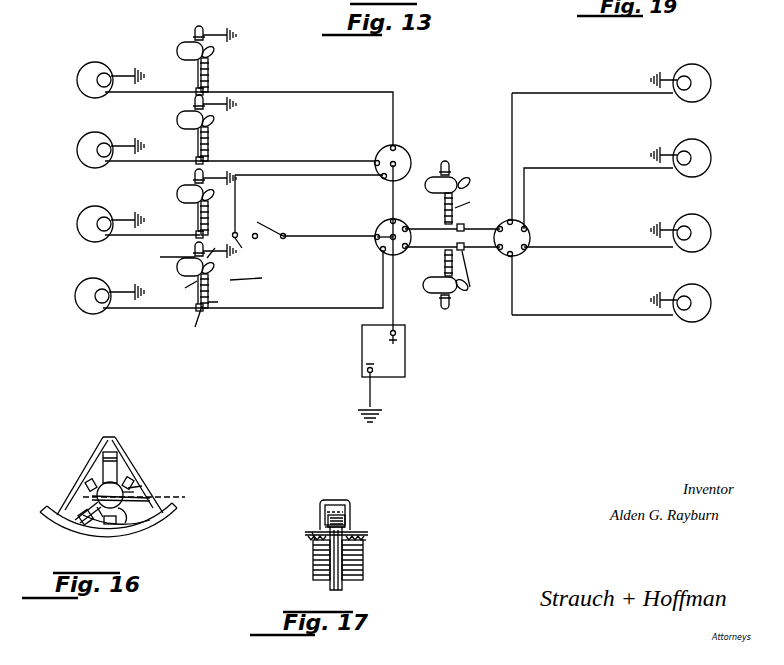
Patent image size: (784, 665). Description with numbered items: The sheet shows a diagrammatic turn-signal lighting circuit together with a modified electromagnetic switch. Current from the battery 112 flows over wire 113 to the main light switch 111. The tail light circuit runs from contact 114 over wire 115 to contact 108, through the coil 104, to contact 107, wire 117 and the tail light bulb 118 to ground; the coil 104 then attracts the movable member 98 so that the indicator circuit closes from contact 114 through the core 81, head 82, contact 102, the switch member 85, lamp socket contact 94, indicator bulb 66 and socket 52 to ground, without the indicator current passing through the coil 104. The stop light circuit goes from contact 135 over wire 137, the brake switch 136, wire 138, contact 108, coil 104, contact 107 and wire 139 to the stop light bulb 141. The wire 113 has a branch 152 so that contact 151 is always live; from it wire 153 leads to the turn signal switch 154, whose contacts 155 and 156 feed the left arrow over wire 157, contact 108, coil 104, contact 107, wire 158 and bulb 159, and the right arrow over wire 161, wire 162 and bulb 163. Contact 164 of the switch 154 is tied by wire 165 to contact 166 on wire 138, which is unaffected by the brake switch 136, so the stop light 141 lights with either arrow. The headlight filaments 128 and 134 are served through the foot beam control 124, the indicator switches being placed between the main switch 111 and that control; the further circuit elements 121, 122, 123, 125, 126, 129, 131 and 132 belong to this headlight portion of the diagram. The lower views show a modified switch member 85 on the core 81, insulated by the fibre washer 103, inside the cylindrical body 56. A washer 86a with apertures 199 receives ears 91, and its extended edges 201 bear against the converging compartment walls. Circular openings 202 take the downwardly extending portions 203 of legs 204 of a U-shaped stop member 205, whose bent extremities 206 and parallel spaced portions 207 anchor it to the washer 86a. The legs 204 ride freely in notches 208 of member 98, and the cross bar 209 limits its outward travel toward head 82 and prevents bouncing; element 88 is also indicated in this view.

In FIG. 13, the indicator bulb 66 is at (203, 28).
In FIG. 13, the switch member 85 is at (177, 47).
In FIG. 16, the switch member 85 is at (114, 465).
In FIG. 13, the movable contact member 98 is at (217, 268).
In FIG. 16, the movable contact member 98 is at (92, 507).
In FIG. 17, the movable contact member 98 is at (348, 505).
In FIG. 13, the coil 104 is at (208, 78).
In FIG. 17, the coil 104 is at (313, 560).
In FIG. 13, the contact member 107 is at (194, 89).
In FIG. 13, the contact member 108 is at (205, 92).
In FIG. 13, the light bulb 159 is at (80, 92).
In FIG. 13, the wire 158 is at (150, 93).
In FIG. 13, the light bulb 163 is at (78, 165).
In FIG. 13, the wire 162 is at (155, 163).
In FIG. 13, the stop light bulb 141 is at (85, 243).
In FIG. 13, the wire 139 is at (142, 237).
In FIG. 13, the tail light bulb 118 is at (85, 318).
In FIG. 13, the wire 117 is at (153, 310).
In FIG. 13, the lamp socket contact 94 is at (169, 256).
In FIG. 13, the light socket 52 is at (218, 246).
In FIG. 13, the contact 102 is at (179, 287).
In FIG. 13, the head 82 is at (255, 280).
In FIG. 17, the head 82 is at (328, 517).
In FIG. 13, the core 81 is at (348, 249).
In FIG. 17, the core 81 is at (347, 582).
In FIG. 13, the wire 157 is at (358, 91).
In FIG. 13, the wire 161 is at (290, 161).
In FIG. 13, the contact 164 is at (378, 176).
In FIG. 13, the wire 165 is at (262, 174).
In FIG. 13, the brake switch 136 is at (266, 228).
In FIG. 13, the wire 138 is at (284, 240).
In FIG. 13, the contact 166 is at (249, 249).
In FIG. 13, the wire 137 is at (285, 236).
In FIG. 13, the wire 115 is at (308, 307).
In FIG. 13, the turn signal switch 154 is at (408, 160).
In FIG. 13, the contact 155 is at (397, 146).
In FIG. 13, the contact 156 is at (376, 160).
In FIG. 13, the wire 153 is at (398, 166).
In FIG. 13, the branch 152 is at (392, 221).
In FIG. 13, the contact 114 is at (385, 251).
In FIG. 13, the contact 151 is at (397, 221).
In FIG. 13, the contact 135 is at (378, 233).
In FIG. 13, the main light switch 111 is at (402, 224).
In FIG. 13, the contact 129 is at (405, 236).
In FIG. 13, the contact 121 is at (411, 238).
In FIG. 13, the conductor 122 is at (438, 244).
In FIG. 13, the contact 125 is at (465, 231).
In FIG. 13, the contact 123 is at (474, 246).
In FIG. 13, the foot beam control 124 is at (515, 257).
In FIG. 13, the contact 131 is at (528, 246).
In FIG. 13, the conductor 126 is at (583, 92).
In FIG. 13, the conductor 132 is at (603, 168).
In FIG. 13, the headlight filament or bulb 128 is at (711, 83).
In FIG. 13, the headlight filament or bulb 134 is at (711, 158).
In FIG. 13, the battery 112 is at (405, 372).
In FIG. 13, the wire 113 is at (395, 313).
In FIG. 16, the extended edges 201 is at (90, 475).
In FIG. 16, the cylindrical body portion 56 is at (167, 520).
In FIG. 16, the extremities 206 is at (147, 497).
In FIG. 17, the extremities 206 is at (315, 532).
In FIG. 16, the ears 91 is at (89, 481).
In FIG. 17, the ears 91 is at (317, 528).
In FIG. 16, the block 88 is at (82, 525).
In FIG. 16, the notches 208 is at (100, 510).
In FIG. 16, the circular openings 202 is at (82, 497).
In FIG. 16, the apertures 199 is at (140, 488).
In FIG. 16, the washer 86a is at (132, 492).
In FIG. 17, the washer 86a is at (367, 531).
In FIG. 16, the parallel spaced portions 207 is at (143, 517).
In FIG. 16, the stop member 205 is at (133, 523).
In FIG. 17, the stop member 205 is at (335, 497).
In FIG. 17, the legs 204 is at (322, 500).
In FIG. 17, the cross bar 209 is at (330, 498).
In FIG. 17, the downwardly extending portions 203 is at (350, 510).
In FIG. 17, the fibre washer 103 is at (365, 543).